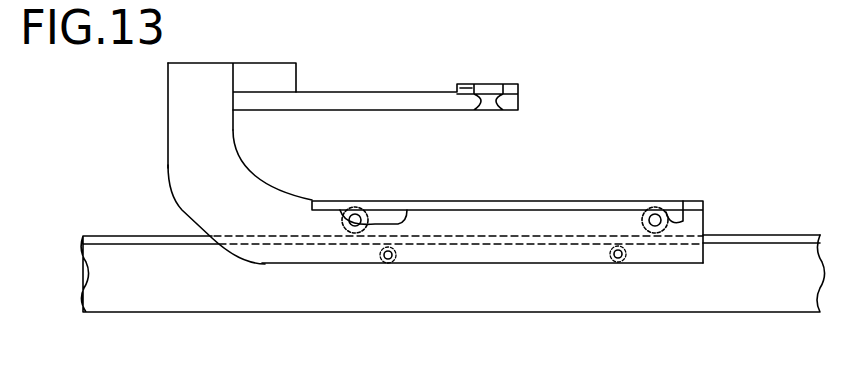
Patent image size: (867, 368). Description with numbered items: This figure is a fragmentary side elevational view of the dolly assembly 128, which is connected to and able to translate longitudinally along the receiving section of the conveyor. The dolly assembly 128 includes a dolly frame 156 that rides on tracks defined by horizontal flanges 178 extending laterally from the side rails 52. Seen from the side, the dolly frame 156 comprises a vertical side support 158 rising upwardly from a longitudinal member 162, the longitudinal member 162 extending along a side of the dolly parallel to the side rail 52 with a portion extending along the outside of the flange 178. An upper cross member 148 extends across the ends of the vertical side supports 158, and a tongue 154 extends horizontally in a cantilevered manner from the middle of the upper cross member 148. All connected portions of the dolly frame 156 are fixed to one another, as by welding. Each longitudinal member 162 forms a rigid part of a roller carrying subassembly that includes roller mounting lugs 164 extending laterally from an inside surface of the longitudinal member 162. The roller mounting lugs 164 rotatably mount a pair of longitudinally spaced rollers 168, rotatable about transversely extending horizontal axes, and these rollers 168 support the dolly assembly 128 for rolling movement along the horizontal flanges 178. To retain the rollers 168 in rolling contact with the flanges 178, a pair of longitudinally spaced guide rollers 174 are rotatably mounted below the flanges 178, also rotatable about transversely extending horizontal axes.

The side rail 52 is at (170, 292).
The dolly assembly 128 is at (726, 191).
The upper cross member 148 is at (233, 64).
The tongue 154 is at (315, 110).
The dolly frame 156 is at (165, 93).
The vertical side support 158 is at (168, 157).
The longitudinal member 162 is at (278, 250).
The roller mounting lug 164 is at (628, 205).
The roller 168 is at (685, 206).
The guide roller 174 is at (608, 254).
The horizontal flange 178 is at (744, 237).